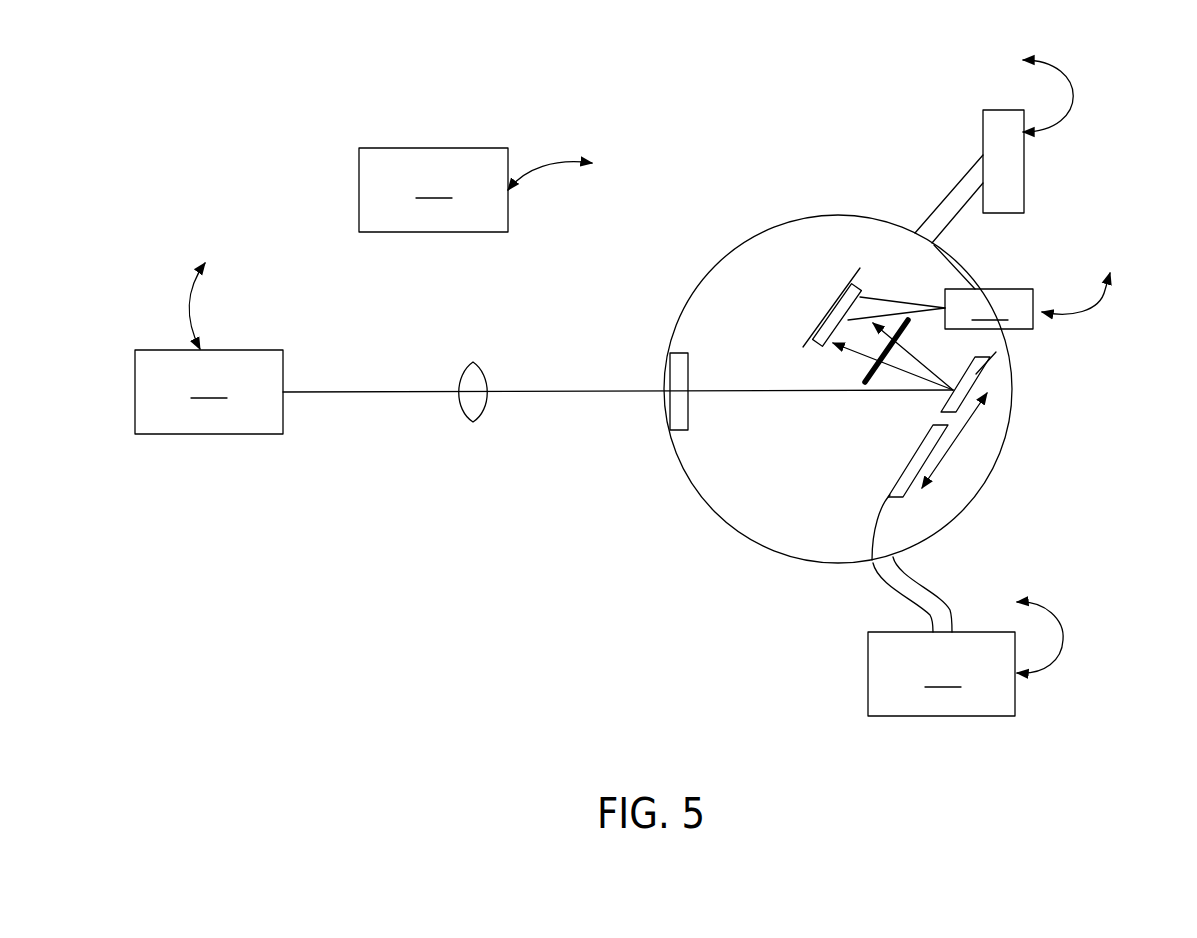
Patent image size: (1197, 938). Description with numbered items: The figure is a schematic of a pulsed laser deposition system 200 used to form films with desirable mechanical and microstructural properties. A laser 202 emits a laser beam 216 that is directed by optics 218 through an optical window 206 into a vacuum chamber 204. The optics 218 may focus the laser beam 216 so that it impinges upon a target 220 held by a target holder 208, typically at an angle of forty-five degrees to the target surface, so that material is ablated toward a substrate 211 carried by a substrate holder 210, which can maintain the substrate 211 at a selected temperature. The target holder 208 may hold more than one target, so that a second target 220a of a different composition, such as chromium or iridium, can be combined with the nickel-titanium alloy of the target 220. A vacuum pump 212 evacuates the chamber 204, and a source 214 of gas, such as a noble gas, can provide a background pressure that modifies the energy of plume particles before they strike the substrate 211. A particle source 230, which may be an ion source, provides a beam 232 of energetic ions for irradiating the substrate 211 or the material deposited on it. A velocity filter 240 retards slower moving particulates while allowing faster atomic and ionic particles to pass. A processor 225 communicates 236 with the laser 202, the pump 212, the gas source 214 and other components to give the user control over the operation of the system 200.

The pulsed laser deposition system 200 is at (1171, 85).
The laser 202 is at (209, 392).
The vacuum chamber 204 is at (698, 498).
The optical window 206 is at (677, 415).
The target holder 208 is at (987, 385).
The substrate holder 210 is at (858, 270).
The substrate 211 is at (808, 345).
The vacuum pump 212 is at (941, 636).
The source of gas 214 is at (1024, 168).
The laser beam 216 is at (367, 392).
The optics 218 is at (470, 365).
The target 220 is at (988, 373).
The second target 220a is at (872, 560).
The processor 225 is at (433, 190).
The particle source 230 is at (989, 309).
The beam of energetic ions 232 is at (903, 302).
The communication 236 is at (191, 308).
The velocity filter 240 is at (875, 385).